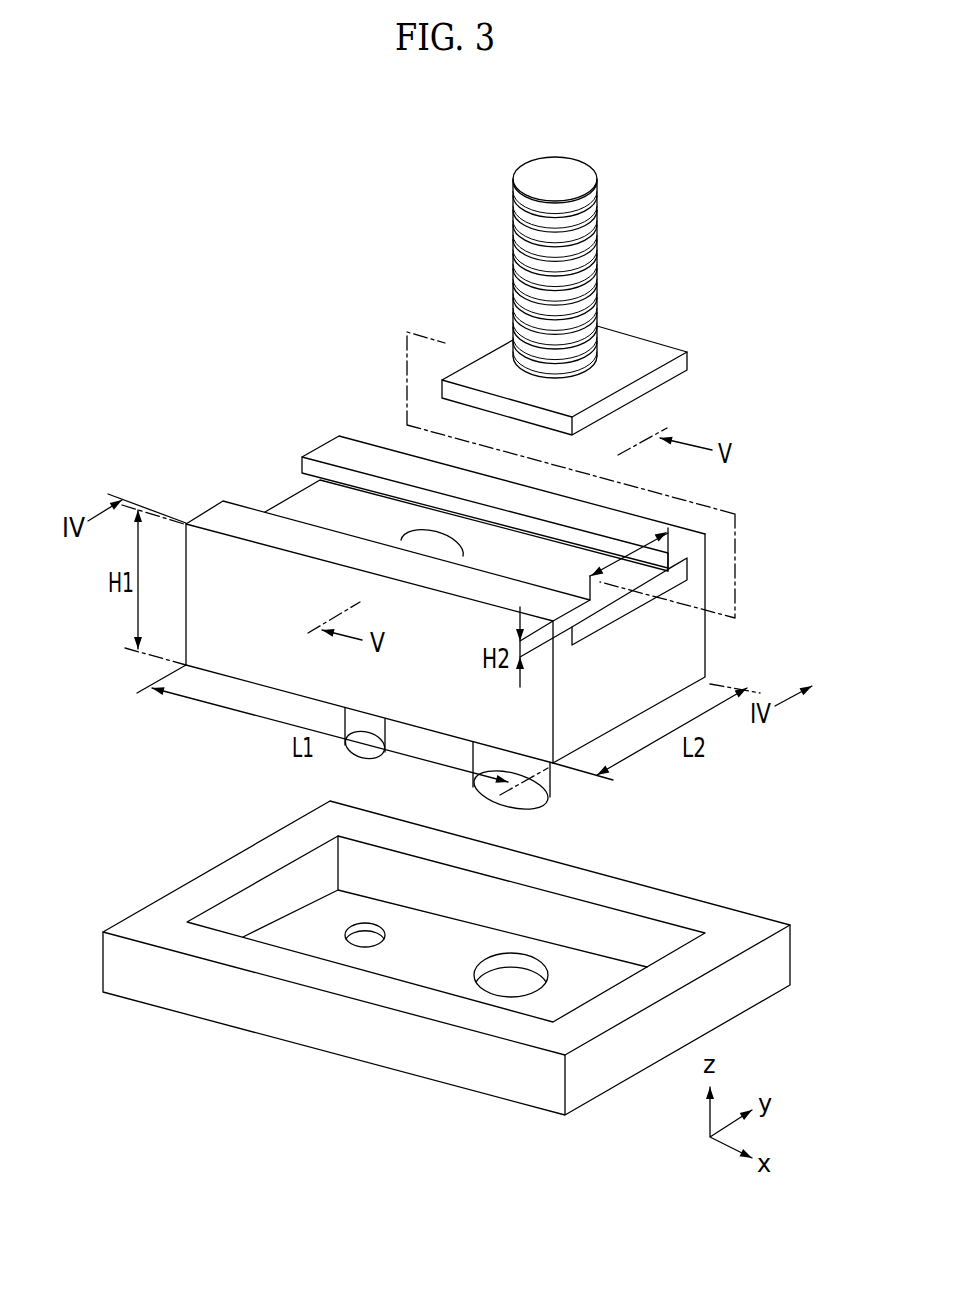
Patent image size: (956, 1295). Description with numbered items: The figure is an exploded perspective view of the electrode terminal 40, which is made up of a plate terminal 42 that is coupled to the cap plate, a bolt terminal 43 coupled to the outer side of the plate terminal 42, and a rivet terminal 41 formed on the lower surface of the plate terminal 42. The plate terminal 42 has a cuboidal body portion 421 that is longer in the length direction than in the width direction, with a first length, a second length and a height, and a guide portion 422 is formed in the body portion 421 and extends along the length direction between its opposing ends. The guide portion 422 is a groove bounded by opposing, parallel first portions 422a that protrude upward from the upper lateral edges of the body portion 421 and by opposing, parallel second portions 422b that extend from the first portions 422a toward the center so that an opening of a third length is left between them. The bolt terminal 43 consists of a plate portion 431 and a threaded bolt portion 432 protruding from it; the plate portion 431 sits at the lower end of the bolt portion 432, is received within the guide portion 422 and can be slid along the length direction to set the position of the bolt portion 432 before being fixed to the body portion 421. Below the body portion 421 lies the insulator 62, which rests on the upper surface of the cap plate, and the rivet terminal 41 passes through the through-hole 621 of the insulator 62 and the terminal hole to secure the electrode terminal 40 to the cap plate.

The electrode terminal 40 is at (342, 374).
The rivet terminal 41 is at (547, 785).
The plate terminal 42 is at (315, 400).
The body portion 421 is at (212, 592).
The guide portion 422 is at (330, 449).
The first portions 422a is at (692, 590).
The second portions 422b is at (680, 555).
The bolt terminal 43 is at (408, 200).
The plate portion 431 is at (500, 352).
The bolt portion 432 is at (518, 218).
The insulator 62 is at (693, 909).
The through-hole 621 is at (533, 963).